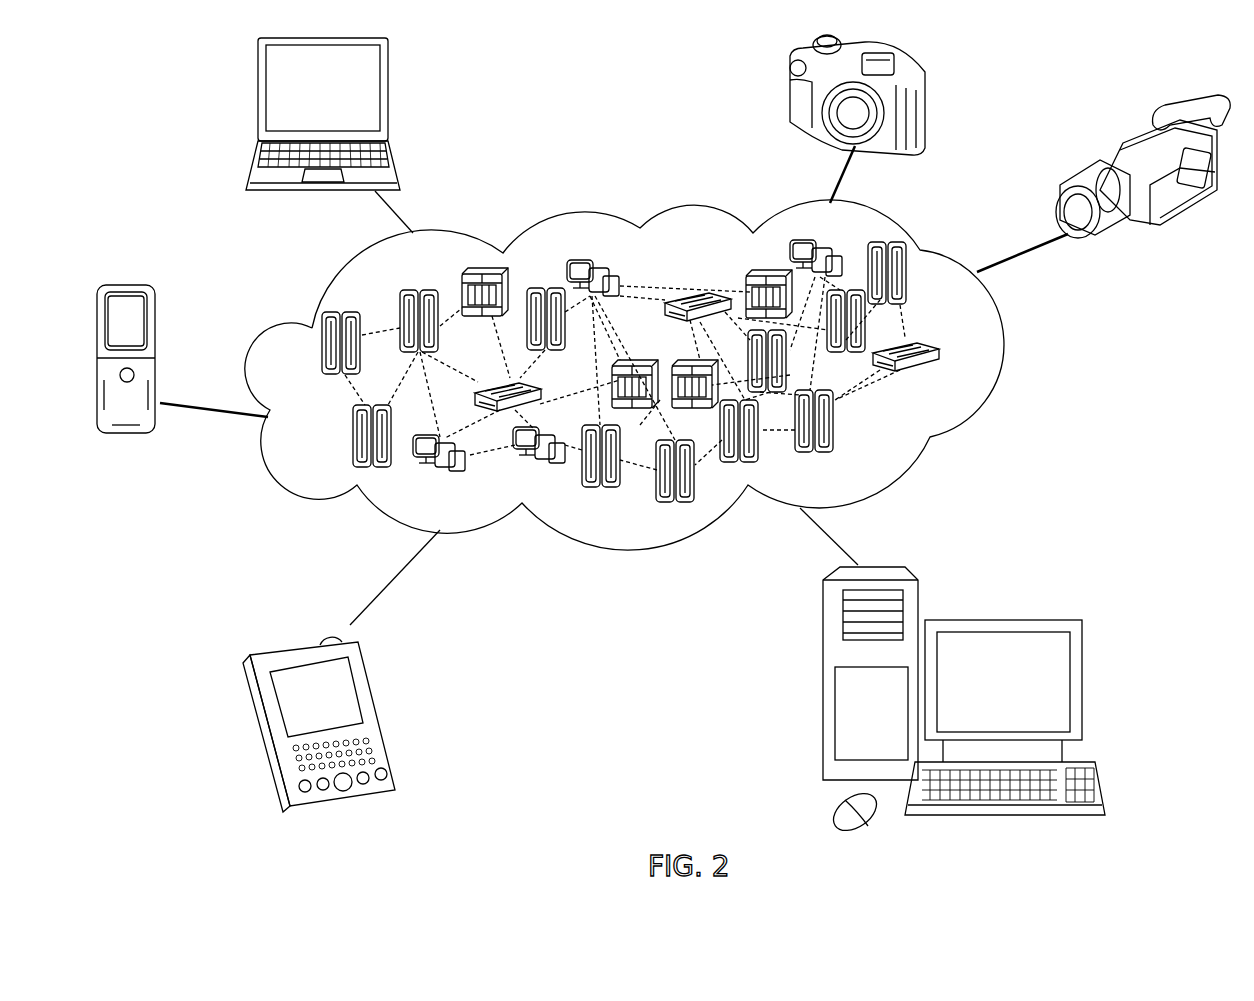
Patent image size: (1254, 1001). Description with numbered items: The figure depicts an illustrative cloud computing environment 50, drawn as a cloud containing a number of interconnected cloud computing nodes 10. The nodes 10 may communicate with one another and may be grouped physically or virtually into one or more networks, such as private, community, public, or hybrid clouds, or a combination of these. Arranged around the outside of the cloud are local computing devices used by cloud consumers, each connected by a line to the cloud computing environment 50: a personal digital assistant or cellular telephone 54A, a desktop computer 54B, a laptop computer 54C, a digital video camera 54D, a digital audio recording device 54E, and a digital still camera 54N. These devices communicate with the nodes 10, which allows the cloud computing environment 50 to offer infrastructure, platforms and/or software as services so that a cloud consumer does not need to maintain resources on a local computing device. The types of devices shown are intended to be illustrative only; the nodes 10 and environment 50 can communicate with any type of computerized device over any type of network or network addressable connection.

The laptop computer 54C is at (388, 99).
The digital still camera 54N is at (823, 119).
The digital video camera 54D is at (1161, 236).
The digital audio recording device 54E is at (120, 436).
The personal digital assistant or cellular telephone 54A is at (378, 710).
The desktop computer 54B is at (1001, 621).
The cloud computing environment 50 is at (999, 354).
The cloud computing node 10 is at (955, 383).